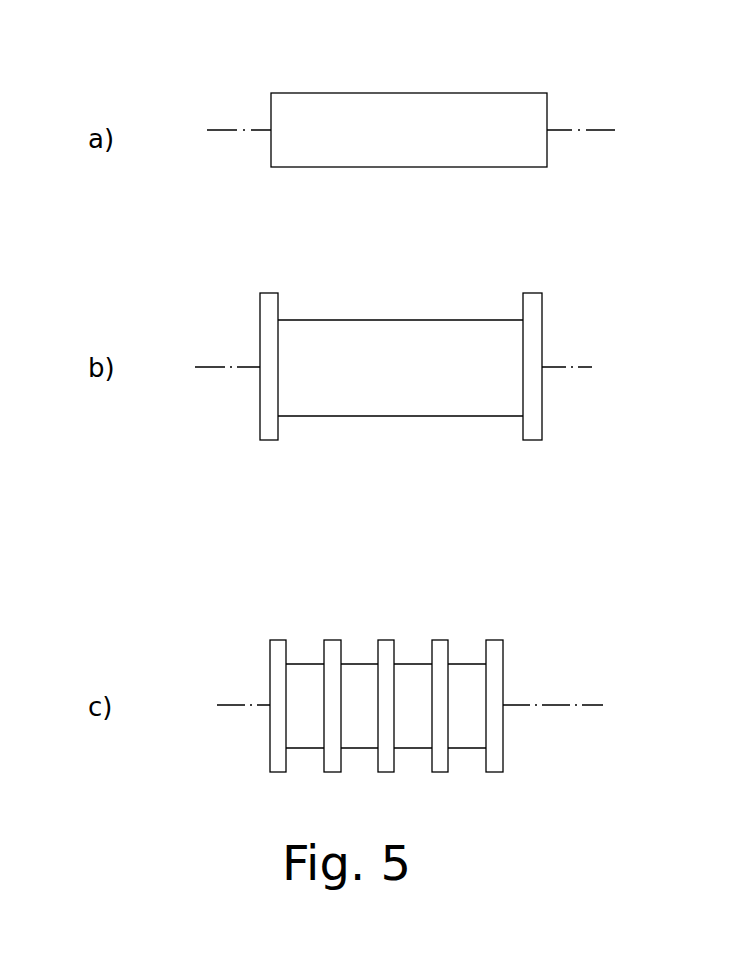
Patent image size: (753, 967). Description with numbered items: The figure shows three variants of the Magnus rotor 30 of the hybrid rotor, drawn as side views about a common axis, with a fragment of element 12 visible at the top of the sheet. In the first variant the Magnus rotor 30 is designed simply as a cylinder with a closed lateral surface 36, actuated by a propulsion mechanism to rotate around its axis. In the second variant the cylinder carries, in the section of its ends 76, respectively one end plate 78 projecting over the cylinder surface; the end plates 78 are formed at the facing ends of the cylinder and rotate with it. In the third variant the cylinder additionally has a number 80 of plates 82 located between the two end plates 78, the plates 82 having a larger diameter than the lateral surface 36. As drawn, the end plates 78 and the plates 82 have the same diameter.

The pivot cradle (partially shown) 12 is at (122, 6).
The Magnus rotor 30 is at (462, 88).
The lateral surface 36 is at (398, 417).
The ends 76 is at (249, 324).
The end plate 78 is at (543, 392).
The number of plates 80 is at (388, 653).
The plates 82 is at (333, 640).